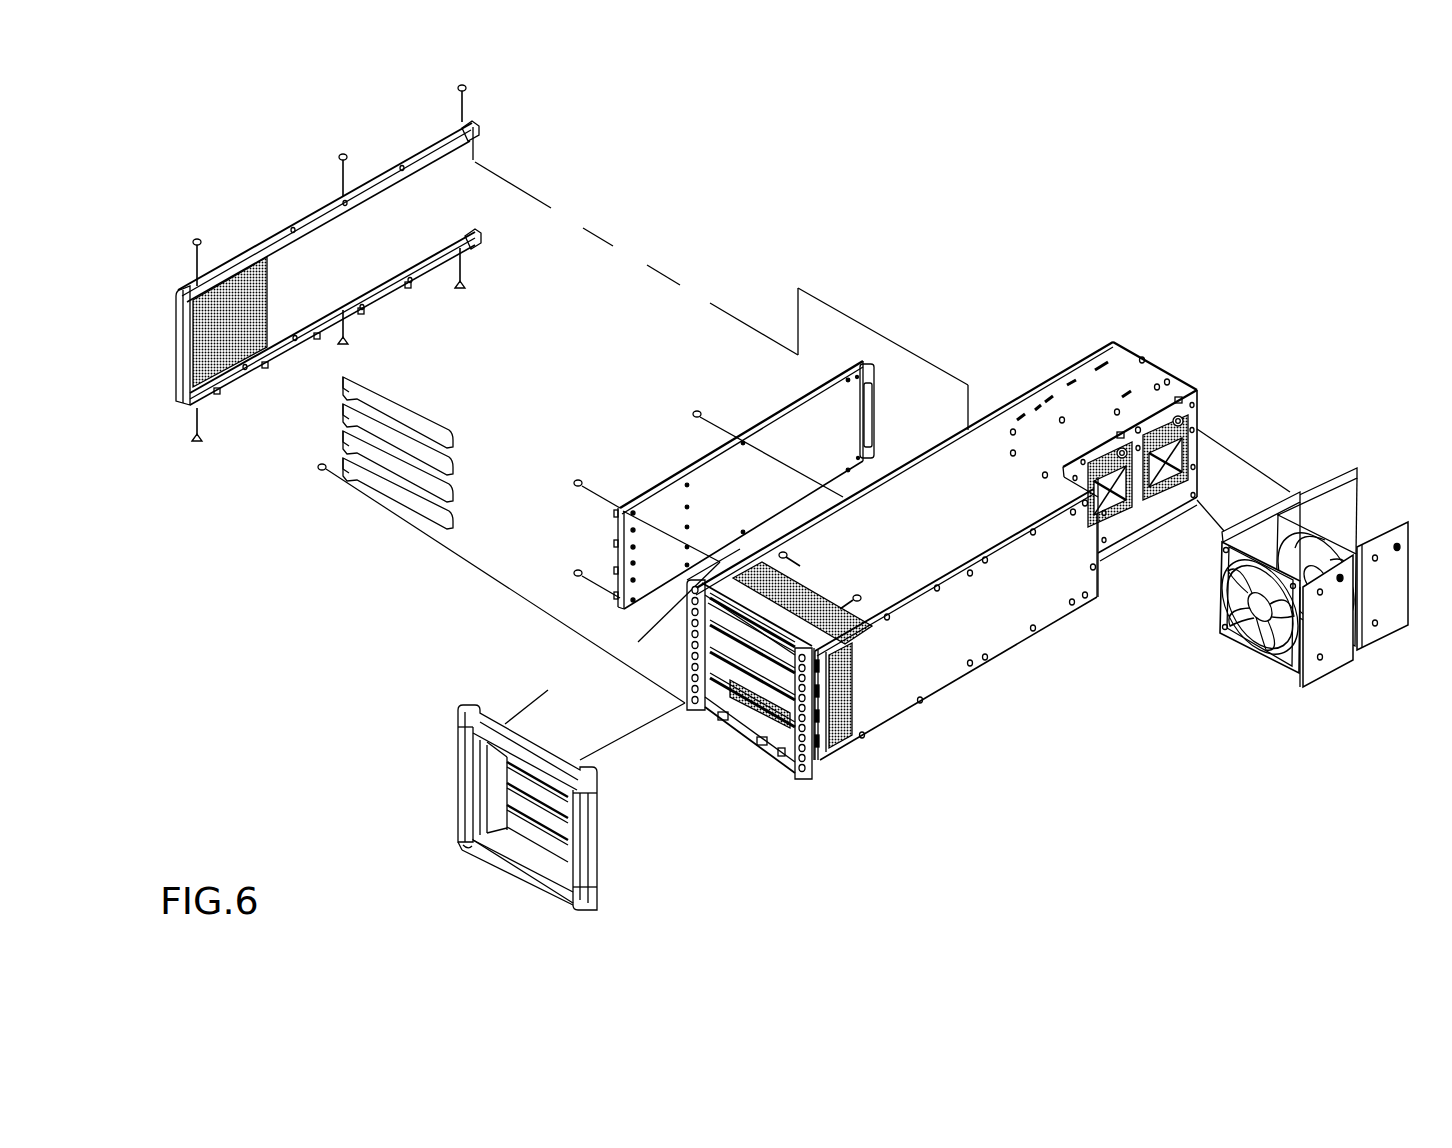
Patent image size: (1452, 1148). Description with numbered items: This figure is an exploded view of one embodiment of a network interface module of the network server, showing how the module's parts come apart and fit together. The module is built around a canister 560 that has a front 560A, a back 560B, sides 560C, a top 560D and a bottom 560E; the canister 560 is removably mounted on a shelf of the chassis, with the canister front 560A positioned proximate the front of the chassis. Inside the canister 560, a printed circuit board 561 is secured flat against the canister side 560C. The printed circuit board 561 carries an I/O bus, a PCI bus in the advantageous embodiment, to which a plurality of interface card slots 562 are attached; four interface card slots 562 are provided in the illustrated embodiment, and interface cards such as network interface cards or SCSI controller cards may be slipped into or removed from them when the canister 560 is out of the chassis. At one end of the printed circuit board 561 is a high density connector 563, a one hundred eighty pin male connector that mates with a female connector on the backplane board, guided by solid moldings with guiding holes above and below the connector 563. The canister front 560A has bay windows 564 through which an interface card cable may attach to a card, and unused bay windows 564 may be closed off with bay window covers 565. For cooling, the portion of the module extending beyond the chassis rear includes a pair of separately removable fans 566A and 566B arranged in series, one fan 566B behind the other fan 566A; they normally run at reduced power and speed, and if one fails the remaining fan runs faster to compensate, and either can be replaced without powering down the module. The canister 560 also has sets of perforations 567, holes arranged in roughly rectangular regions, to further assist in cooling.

The canister 560 is at (1040, 662).
The canister front 560A is at (470, 872).
The canister back 560B is at (1158, 358).
The canister side 560C is at (275, 183).
The canister top 560D is at (1023, 383).
The canister bottom 560E is at (792, 808).
The printed circuit board 561 is at (733, 420).
The interface card slots 562 is at (657, 482).
The high density connector 563 is at (857, 363).
The bay windows 564 is at (703, 660).
The bay window covers 565 is at (343, 388).
The separately removable fan 566A is at (1328, 650).
The separately removable fan 566B is at (1395, 617).
The perforations 567 is at (180, 337).